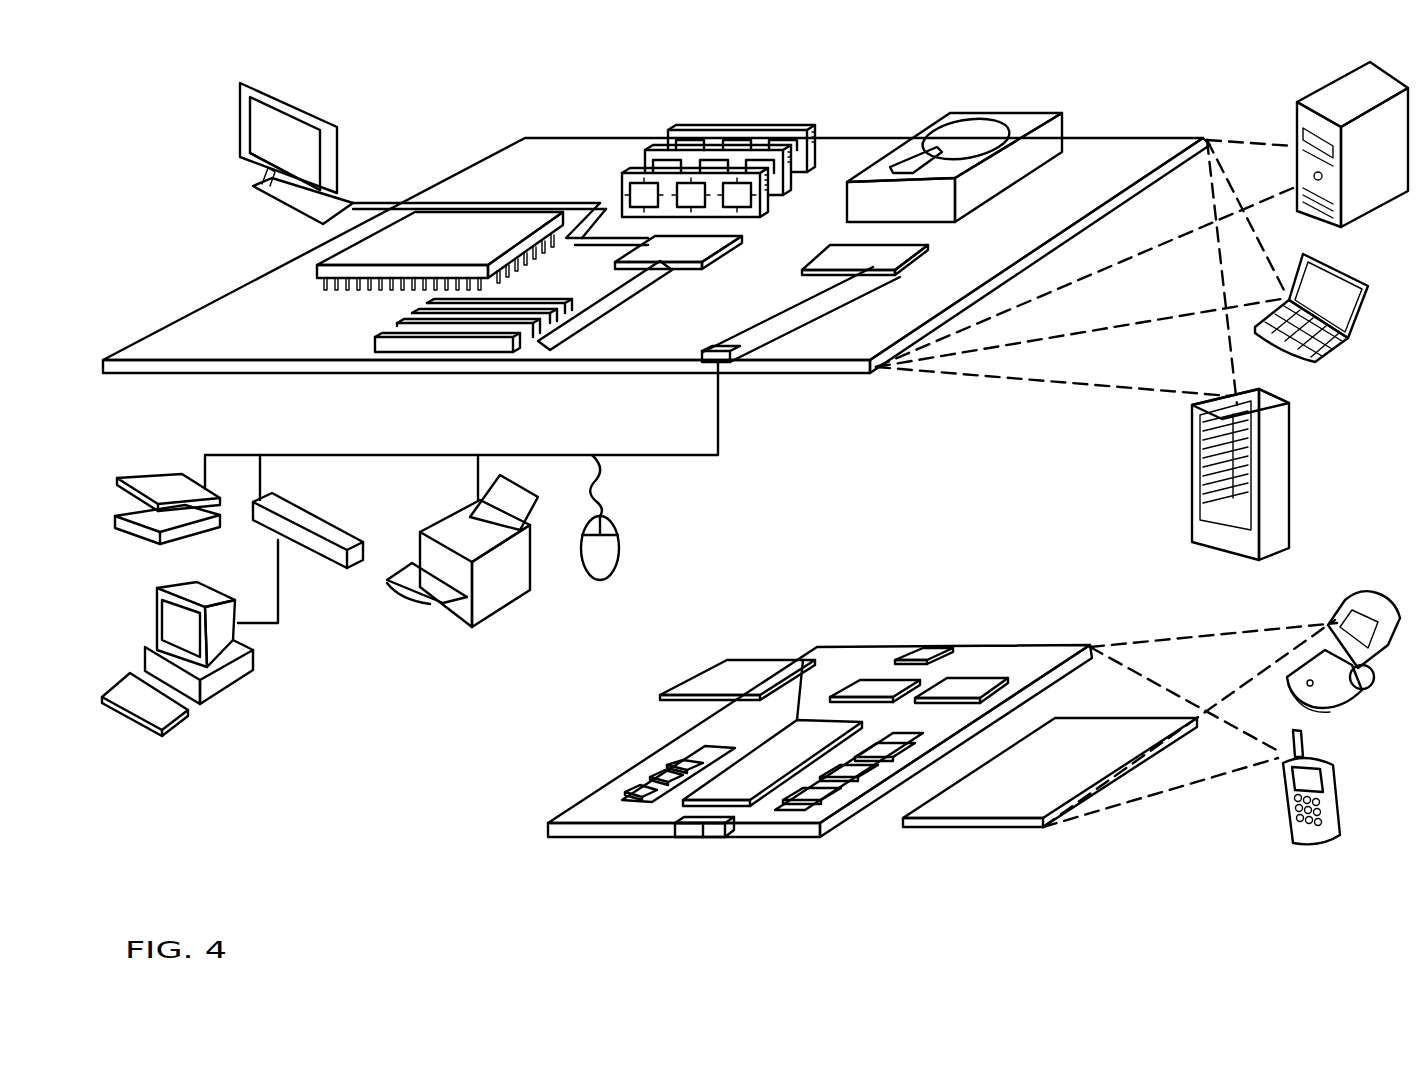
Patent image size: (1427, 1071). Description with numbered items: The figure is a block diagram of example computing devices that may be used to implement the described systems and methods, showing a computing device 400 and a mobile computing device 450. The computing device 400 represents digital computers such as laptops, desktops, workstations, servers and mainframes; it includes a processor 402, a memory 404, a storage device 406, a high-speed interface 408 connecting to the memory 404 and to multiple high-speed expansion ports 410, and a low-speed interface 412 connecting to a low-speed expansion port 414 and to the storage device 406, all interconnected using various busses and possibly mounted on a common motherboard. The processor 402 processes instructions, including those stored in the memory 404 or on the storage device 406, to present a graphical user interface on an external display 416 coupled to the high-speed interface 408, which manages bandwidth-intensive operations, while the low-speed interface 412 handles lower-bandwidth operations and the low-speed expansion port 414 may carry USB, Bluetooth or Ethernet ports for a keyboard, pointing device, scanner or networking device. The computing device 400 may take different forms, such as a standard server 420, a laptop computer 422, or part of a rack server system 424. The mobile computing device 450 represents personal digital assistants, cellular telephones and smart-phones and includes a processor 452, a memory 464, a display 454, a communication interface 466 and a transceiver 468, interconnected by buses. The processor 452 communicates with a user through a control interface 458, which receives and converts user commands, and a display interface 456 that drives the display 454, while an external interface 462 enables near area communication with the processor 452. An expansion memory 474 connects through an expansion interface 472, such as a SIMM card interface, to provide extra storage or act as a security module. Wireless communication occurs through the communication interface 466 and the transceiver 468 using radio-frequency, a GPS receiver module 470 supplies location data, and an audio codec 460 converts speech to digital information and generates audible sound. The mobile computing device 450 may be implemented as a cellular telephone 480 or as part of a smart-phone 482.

The computing device 400 is at (458, 102).
The processor 402 is at (318, 266).
The memory 404 is at (690, 131).
The storage device 406 is at (947, 117).
The high-speed interface 408 is at (650, 250).
The high-speed expansion ports 410 is at (385, 333).
The low-speed interface 412 is at (846, 256).
The low-speed expansion port 414 is at (732, 364).
The display 416 is at (245, 83).
The standard server 420 is at (1297, 114).
The laptop computer 422 is at (1313, 364).
The rack server system 424 is at (1195, 494).
The mobile computing device 450 is at (518, 835).
The processor 452 is at (743, 788).
The display 454 is at (1003, 808).
The display interface 456 is at (817, 797).
The control interface 458 is at (855, 770).
The audio codec 460 is at (885, 747).
The external interface 462 is at (707, 830).
The memory 464 is at (648, 778).
The communication interface 466 is at (877, 687).
The transceiver 468 is at (962, 687).
The GPS receiver module 470 is at (933, 650).
The expansion interface 472 is at (800, 660).
The expansion memory 474 is at (718, 665).
The cellular telephone 480 is at (1345, 605).
The smart-phone 482 is at (1283, 792).